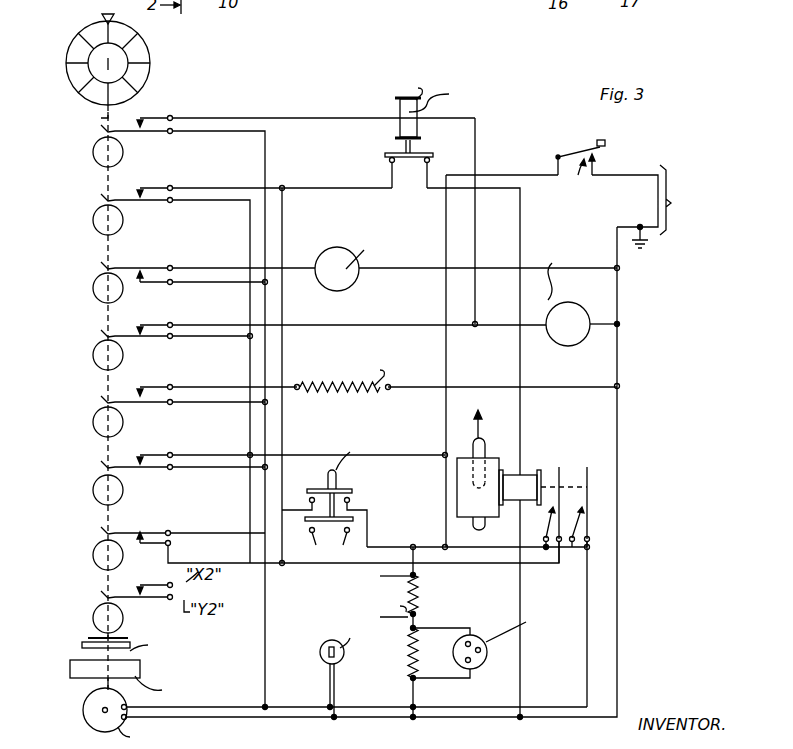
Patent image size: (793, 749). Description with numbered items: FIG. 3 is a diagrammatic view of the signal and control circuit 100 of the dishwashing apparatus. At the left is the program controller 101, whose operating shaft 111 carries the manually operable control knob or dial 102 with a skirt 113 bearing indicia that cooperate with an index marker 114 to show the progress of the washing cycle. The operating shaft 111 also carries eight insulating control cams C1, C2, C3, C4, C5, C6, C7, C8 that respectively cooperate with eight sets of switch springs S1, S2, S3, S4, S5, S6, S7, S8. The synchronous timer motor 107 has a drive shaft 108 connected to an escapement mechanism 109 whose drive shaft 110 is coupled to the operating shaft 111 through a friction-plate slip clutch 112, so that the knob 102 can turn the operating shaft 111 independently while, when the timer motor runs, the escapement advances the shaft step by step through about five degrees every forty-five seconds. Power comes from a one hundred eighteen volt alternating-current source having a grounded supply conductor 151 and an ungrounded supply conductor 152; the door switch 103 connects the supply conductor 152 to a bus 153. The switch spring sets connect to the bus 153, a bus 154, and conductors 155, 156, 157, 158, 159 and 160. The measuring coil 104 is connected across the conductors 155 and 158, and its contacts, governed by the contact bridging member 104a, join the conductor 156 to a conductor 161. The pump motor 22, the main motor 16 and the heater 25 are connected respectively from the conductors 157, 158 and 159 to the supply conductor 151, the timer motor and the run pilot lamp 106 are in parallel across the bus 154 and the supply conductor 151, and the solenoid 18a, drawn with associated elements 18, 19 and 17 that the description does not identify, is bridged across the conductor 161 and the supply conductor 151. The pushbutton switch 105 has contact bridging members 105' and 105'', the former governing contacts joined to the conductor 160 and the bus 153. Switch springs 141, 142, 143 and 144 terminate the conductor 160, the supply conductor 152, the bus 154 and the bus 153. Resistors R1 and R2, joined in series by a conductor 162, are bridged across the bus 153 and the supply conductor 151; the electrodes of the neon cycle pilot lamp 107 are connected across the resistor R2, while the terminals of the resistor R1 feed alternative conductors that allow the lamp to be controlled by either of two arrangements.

The control circuit 100 is at (295, 78).
The program controller 101 is at (58, 83).
The control knob 102 is at (80, 41).
The skirt 113 is at (134, 47).
The index marker 114 is at (104, 14).
The operating shaft 111 is at (101, 118).
The insulating control cam C1 is at (92, 152).
The insulating control cam C2 is at (92, 220).
The insulating control cam C3 is at (92, 288).
The insulating control cam C4 is at (92, 355).
The insulating control cam C5 is at (92, 422).
The insulating control cam C6 is at (92, 490).
The insulating control cam C7 is at (92, 555).
The insulating control cam C8 is at (90, 618).
The set of switch springs S1 is at (137, 115).
The set of switch springs S2 is at (137, 185).
The set of switch springs S3 is at (137, 266).
The set of switch springs S4 is at (137, 321).
The set of switch springs S5 is at (137, 385).
The set of switch springs S6 is at (137, 452).
The set of switch springs S7 is at (136, 529).
The set of switch springs S8 is at (137, 582).
The supply conductor 151 is at (647, 223).
The supply conductor 152 is at (652, 170).
The bus 153 is at (236, 206).
The bus 154 is at (236, 140).
The conductor 155 is at (237, 116).
The conductor 156 is at (237, 186).
The conductor 157 is at (237, 263).
The conductor 158 is at (475, 119).
The conductor 159 is at (239, 382).
The conductor 160 is at (237, 562).
The conductor 161 is at (520, 247).
The conductor 162 is at (418, 624).
The door switch 103 is at (589, 145).
The measuring coil 104 is at (400, 115).
The contact bridging member 104a is at (390, 155).
The pushbutton switch 105 is at (354, 497).
The contact bridging member 105' is at (346, 507).
The contact bridging member 105'' is at (363, 528).
The run pilot lamp 106 is at (324, 668).
The cycle pilot lamp / synchronous timer motor 107 is at (478, 664).
The drive shaft 108 is at (100, 680).
The escapement mechanism 109 is at (70, 669).
The drive shaft 110 is at (85, 656).
The slip clutch 112 is at (120, 638).
The main motor 16 is at (581, 299).
The pump motor 22 is at (346, 251).
The heater 25 is at (368, 396).
The valve 18 is at (469, 457).
The solenoid 18a is at (525, 478).
The valve plunger 19 is at (483, 446).
The valve outlet 17 is at (472, 522).
The switch spring 141 is at (556, 515).
The switch spring 142 is at (540, 524).
The switch spring 143 is at (590, 508).
The switch spring 144 is at (573, 523).
The resistor R1 is at (418, 598).
The resistor R2 is at (408, 663).